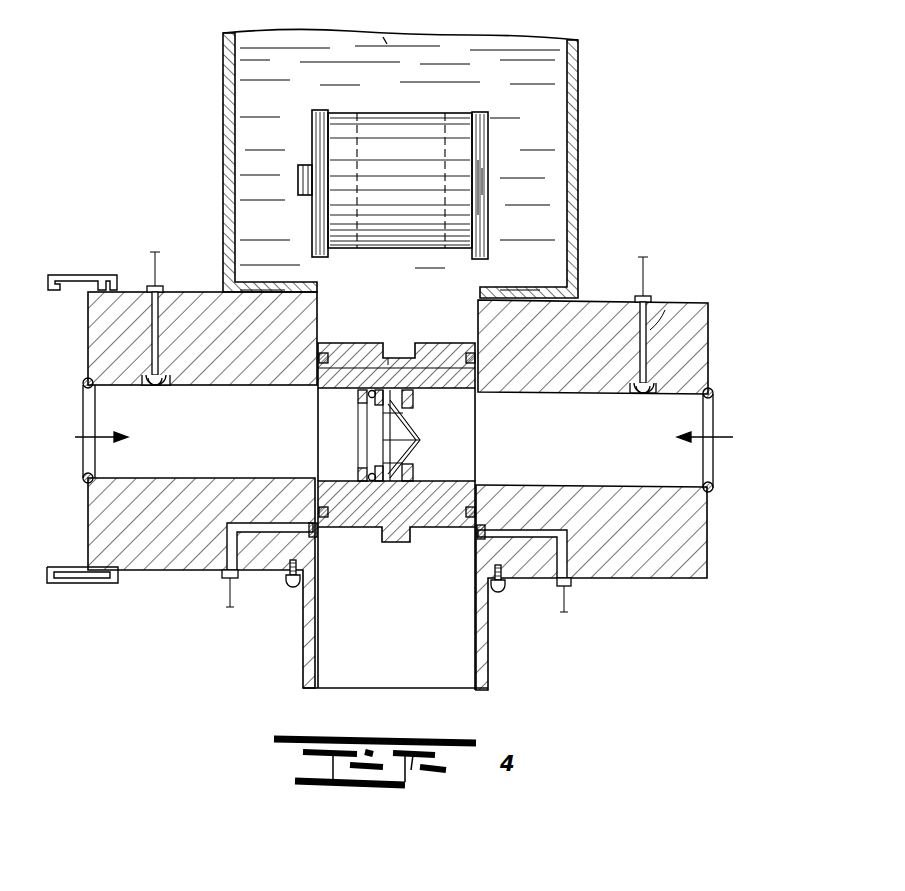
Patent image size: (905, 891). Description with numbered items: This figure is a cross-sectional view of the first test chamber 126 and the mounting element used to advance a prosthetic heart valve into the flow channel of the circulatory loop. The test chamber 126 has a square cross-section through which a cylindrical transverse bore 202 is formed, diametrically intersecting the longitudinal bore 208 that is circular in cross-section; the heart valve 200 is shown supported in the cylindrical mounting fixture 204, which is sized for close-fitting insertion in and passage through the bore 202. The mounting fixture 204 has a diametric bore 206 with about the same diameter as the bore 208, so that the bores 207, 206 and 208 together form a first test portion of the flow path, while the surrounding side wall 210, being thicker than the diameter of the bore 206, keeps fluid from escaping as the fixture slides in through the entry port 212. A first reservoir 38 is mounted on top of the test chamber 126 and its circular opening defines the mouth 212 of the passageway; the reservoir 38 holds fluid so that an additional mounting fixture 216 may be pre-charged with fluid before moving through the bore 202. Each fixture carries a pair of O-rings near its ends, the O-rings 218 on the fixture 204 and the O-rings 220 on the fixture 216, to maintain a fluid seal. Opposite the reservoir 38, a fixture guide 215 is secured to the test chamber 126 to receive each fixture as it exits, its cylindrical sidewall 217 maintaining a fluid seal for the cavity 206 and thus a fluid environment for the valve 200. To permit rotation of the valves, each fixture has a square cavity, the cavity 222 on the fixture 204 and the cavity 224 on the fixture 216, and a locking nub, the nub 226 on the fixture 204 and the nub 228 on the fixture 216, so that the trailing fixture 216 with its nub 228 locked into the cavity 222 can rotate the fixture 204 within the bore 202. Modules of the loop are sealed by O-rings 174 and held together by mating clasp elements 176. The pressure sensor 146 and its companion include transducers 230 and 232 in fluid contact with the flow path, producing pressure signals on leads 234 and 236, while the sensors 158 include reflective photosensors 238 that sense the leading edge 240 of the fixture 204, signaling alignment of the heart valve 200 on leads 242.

The first reservoir 38 is at (413, 152).
The first test chamber 126 is at (604, 231).
The pressure sensor 146 is at (652, 330).
The sensors 158 is at (255, 535).
The O-rings 174 is at (84, 383).
The mating clasp elements 176 is at (80, 275).
The heart valve 200 is at (422, 438).
The transverse bore 202 is at (325, 326).
The mounting fixture 204 is at (455, 480).
The diametric bore 206 is at (341, 411).
The bore 207 is at (79, 438).
The bore 208 is at (727, 438).
The side wall 210 is at (208, 300).
The entry port 212 is at (452, 280).
The fixture guide 215 is at (490, 675).
The mounting fixture 216 is at (390, 122).
The sidewall 217 is at (303, 670).
The O-rings 218 is at (474, 352).
The O-rings 220 is at (320, 112).
The square shaped cavity 222 is at (394, 352).
The square shaped cavity 224 is at (488, 190).
The locking nub 226 is at (405, 542).
The locking nub 228 is at (303, 196).
The transducer 230 is at (158, 388).
The transducer 232 is at (648, 392).
The leads 234 is at (152, 258).
The leads 236 is at (655, 268).
The reflective photosensors 238 is at (313, 515).
The leading edge 240 is at (352, 527).
The leads 242 is at (230, 595).